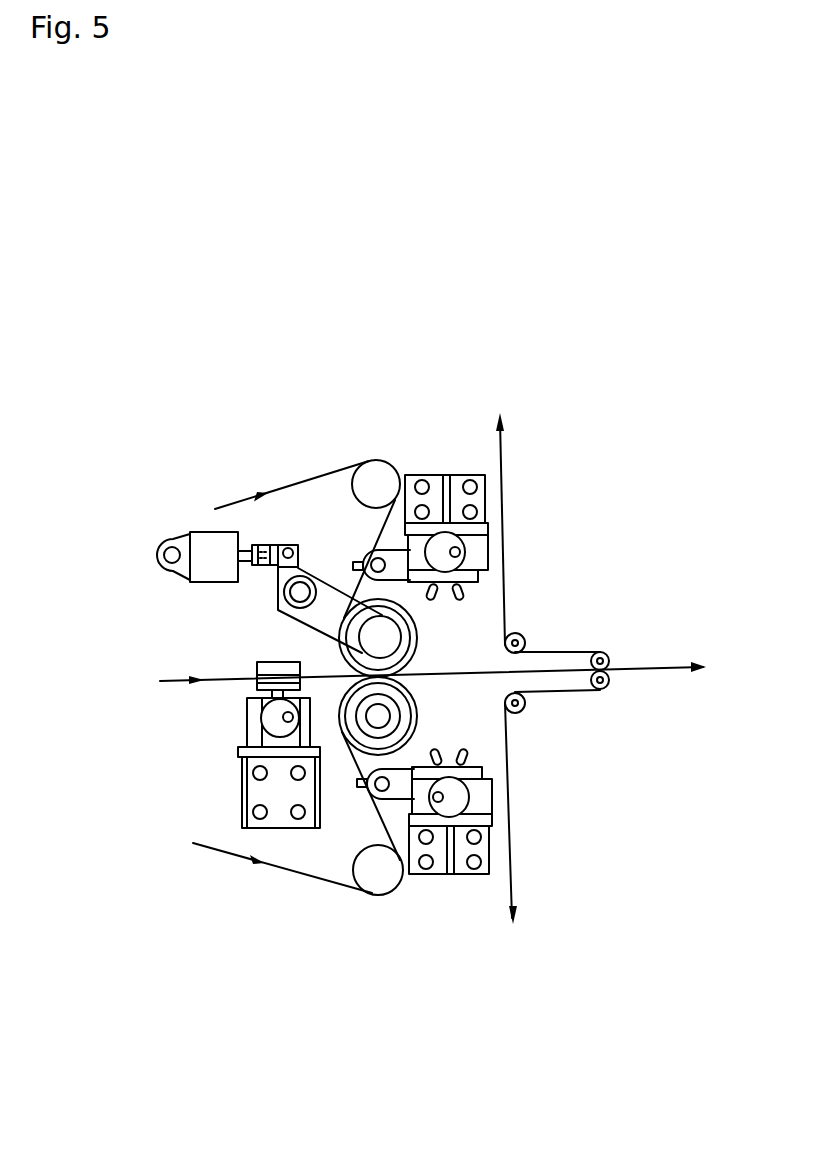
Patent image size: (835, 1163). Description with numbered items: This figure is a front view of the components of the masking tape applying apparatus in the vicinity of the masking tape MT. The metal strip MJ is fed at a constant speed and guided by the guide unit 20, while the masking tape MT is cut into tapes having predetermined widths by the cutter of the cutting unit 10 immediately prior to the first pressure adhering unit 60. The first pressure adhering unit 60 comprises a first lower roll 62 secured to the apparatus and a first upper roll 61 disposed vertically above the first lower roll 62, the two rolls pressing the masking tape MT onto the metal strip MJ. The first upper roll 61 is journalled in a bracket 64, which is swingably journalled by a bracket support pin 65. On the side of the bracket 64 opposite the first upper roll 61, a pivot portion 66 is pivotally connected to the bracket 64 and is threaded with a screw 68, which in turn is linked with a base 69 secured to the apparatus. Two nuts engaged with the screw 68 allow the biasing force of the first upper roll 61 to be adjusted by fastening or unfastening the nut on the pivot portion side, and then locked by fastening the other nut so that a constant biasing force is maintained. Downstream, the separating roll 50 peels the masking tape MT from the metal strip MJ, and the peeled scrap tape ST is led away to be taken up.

The cutting unit 10 is at (458, 475).
The guide unit 20 is at (240, 710).
The separating roll 50 is at (607, 652).
The first pressure adhering unit 60 is at (305, 642).
The first upper roll 61 is at (420, 630).
The first lower roll 62 is at (348, 737).
The bracket 64 is at (315, 616).
The bracket support pin 65 is at (298, 592).
The pivot portion 66 is at (287, 548).
The screw 68 is at (263, 537).
The base 69 is at (202, 562).
The masking tape MT is at (342, 468).
The scrap tape ST is at (505, 508).
The metal strip MJ is at (673, 667).